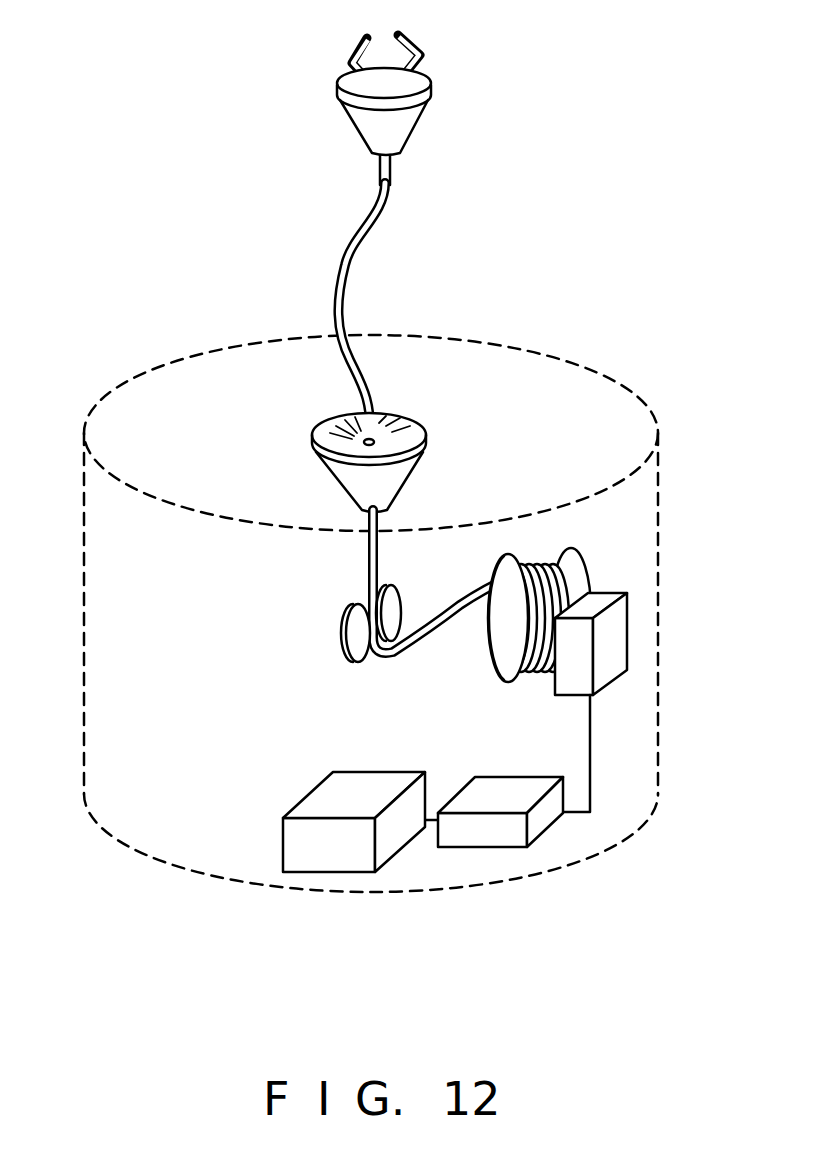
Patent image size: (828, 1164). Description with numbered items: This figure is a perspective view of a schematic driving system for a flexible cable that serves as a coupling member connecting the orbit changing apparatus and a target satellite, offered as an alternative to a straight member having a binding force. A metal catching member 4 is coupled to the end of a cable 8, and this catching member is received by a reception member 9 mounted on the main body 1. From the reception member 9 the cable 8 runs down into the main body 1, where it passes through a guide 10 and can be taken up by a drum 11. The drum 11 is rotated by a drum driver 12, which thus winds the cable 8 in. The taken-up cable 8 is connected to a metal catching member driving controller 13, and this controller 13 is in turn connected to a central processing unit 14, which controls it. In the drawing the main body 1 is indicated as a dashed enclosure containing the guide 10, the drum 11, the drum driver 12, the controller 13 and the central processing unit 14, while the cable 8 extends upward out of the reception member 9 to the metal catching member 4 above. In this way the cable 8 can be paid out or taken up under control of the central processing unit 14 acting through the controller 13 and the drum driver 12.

The main body 1 is at (658, 483).
The metal catching member 4 is at (424, 54).
The cable 8 is at (357, 254).
The reception member 9 is at (404, 430).
The guide 10 is at (343, 625).
The drum 11 is at (580, 588).
The drum driver 12 is at (608, 675).
The metal catching member driving controller 13 is at (545, 821).
The central processing unit 14 is at (333, 863).